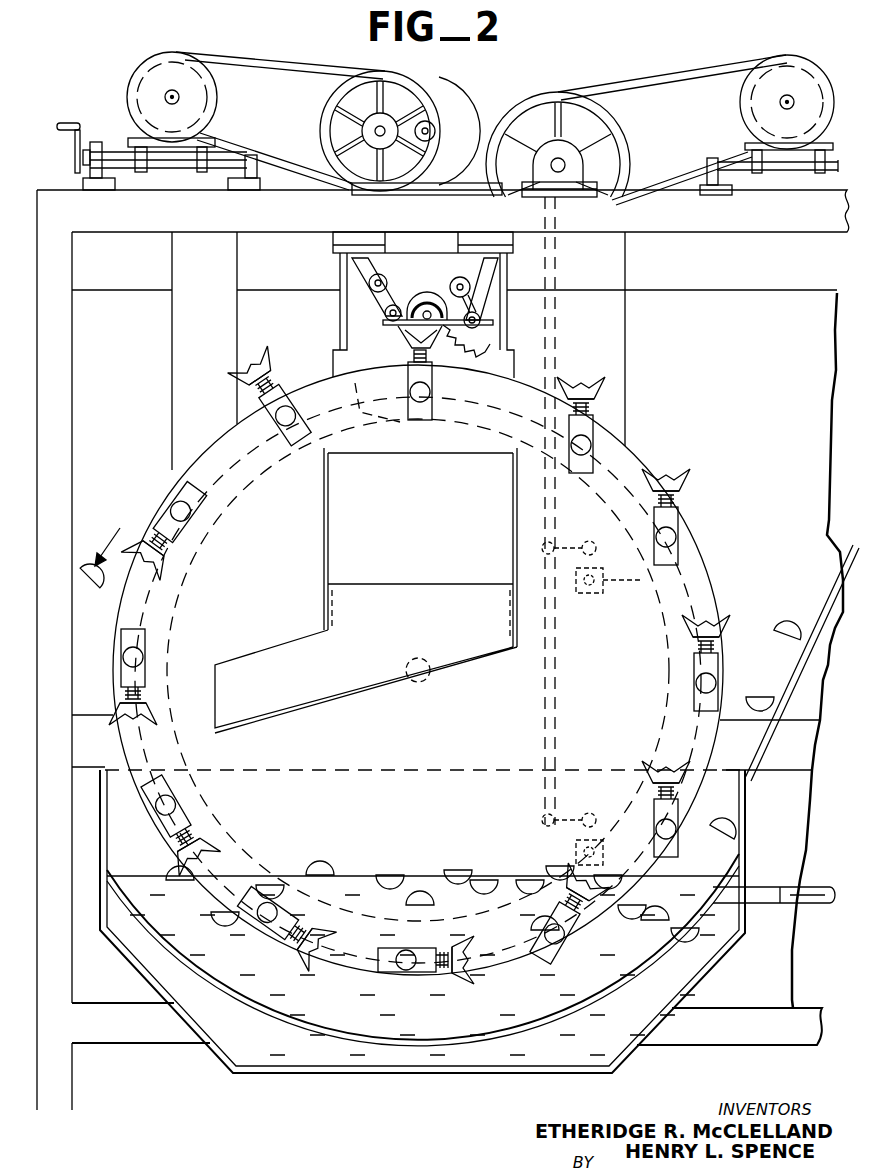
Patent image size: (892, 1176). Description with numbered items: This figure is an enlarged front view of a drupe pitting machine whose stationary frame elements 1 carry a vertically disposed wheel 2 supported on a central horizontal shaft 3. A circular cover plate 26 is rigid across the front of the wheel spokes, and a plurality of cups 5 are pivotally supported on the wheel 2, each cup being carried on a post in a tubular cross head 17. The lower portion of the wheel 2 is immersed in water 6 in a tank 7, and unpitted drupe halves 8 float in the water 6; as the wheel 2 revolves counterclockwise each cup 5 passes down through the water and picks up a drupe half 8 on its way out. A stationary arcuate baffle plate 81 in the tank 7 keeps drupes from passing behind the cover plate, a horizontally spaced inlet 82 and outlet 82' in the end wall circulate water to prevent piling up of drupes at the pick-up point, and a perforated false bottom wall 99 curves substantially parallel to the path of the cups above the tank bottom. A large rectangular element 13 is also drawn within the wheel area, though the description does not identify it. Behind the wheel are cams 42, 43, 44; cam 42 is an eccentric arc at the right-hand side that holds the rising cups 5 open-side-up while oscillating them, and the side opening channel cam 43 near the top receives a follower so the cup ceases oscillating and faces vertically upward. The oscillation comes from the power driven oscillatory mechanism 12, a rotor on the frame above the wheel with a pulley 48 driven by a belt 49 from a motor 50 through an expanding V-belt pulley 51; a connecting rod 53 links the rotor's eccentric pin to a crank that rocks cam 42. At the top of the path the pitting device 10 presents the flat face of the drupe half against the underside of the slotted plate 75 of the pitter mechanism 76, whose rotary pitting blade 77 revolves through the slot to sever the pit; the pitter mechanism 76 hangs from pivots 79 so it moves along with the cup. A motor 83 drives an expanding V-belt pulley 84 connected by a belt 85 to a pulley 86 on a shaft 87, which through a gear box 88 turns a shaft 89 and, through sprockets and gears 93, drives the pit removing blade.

The stationary frame elements 1 is at (684, 336).
The wheel 2 is at (721, 587).
The central horizontal shaft 3 is at (431, 683).
The cups 5 is at (692, 478).
The water 6 is at (420, 900).
The tank 7 is at (718, 970).
The unpitted drupe halves 8 is at (485, 877).
The pitting device 10 is at (333, 270).
The power driven oscillatory mechanism 12 is at (588, 158).
The feed chute 13 is at (421, 520).
The tubular cross head 17 is at (406, 420).
The circular cover plate 26 is at (364, 794).
The cam 42 is at (652, 626).
The side opening arcuately extending cam 43 is at (500, 407).
The cam 44 is at (173, 600).
The pulley 48 is at (611, 133).
The belt 49 is at (672, 80).
The motor 50 is at (813, 63).
The expanding V-belt pulley 51 is at (750, 108).
The connecting rod 53 is at (560, 309).
The slotted plate 75 is at (389, 332).
The pitter mechanism 76 is at (382, 312).
The rotary pitting blade 77 is at (471, 300).
The pivots 79 is at (452, 283).
The baffle plate 81 is at (222, 862).
The inlet 82 is at (752, 872).
The outlet 82' is at (809, 917).
The motor 83 is at (175, 53).
The expanding V-belt pulley 84 is at (213, 95).
The belt 85 is at (278, 66).
The pulley 86 is at (336, 97).
The shaft 87 is at (372, 130).
The gear box 88 is at (469, 124).
The shaft 89 is at (437, 113).
The gears 93 is at (478, 356).
The perforated false bottom wall 99 is at (546, 1026).